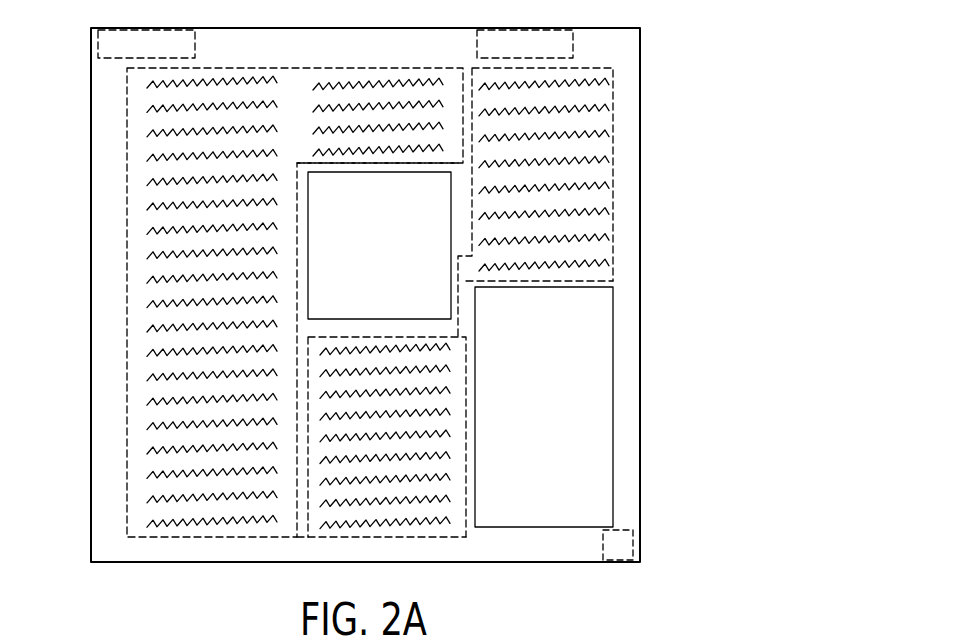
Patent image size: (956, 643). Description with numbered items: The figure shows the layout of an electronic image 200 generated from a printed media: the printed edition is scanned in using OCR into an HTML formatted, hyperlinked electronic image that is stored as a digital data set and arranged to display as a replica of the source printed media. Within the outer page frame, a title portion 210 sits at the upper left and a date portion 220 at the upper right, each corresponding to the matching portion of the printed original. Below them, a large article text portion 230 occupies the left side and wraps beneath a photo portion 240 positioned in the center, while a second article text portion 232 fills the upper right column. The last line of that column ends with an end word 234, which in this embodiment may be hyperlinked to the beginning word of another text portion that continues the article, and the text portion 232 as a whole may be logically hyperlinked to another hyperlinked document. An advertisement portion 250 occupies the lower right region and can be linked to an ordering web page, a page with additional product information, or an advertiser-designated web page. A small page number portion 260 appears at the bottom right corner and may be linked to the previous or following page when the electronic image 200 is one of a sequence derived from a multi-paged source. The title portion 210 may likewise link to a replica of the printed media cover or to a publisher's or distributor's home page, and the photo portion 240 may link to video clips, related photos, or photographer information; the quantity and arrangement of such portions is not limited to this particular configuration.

The electronic image 200 is at (91, 227).
The title portion 210 is at (91, 42).
The date portion 220 is at (575, 43).
The article text portion 230 is at (127, 385).
The article text portion 232 is at (613, 166).
The end word 234 is at (608, 267).
The photo portion 240 is at (451, 308).
The advertisement portion 250 is at (613, 383).
The page number portion 260 is at (636, 543).